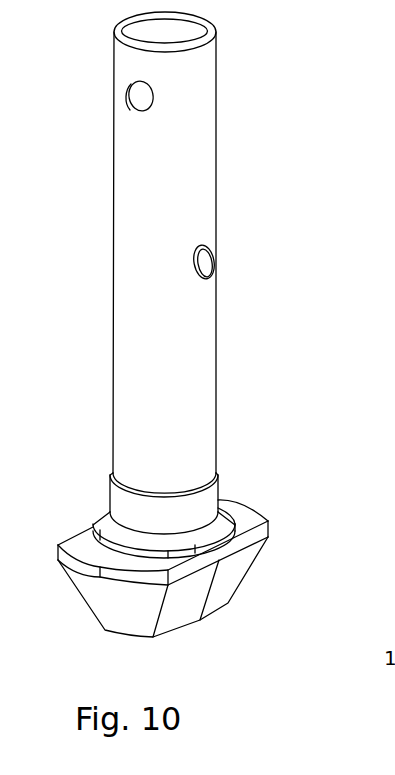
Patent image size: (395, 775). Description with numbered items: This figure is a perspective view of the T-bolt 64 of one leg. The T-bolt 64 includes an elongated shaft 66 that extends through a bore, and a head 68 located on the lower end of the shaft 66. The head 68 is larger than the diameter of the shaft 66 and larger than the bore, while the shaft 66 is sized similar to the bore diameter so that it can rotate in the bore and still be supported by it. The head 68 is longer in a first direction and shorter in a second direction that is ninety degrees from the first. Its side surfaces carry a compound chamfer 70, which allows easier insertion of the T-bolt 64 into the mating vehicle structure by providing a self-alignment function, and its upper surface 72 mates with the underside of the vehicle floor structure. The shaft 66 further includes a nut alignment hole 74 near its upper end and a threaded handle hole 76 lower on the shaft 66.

The T-bolt 64 is at (293, 85).
The shaft 66 is at (220, 392).
The head 68 is at (270, 522).
The compound chamfer 70 is at (223, 604).
The upper surface 72 is at (75, 530).
The nut alignment hole 74 is at (125, 100).
The threaded handle hole 76 is at (213, 243).